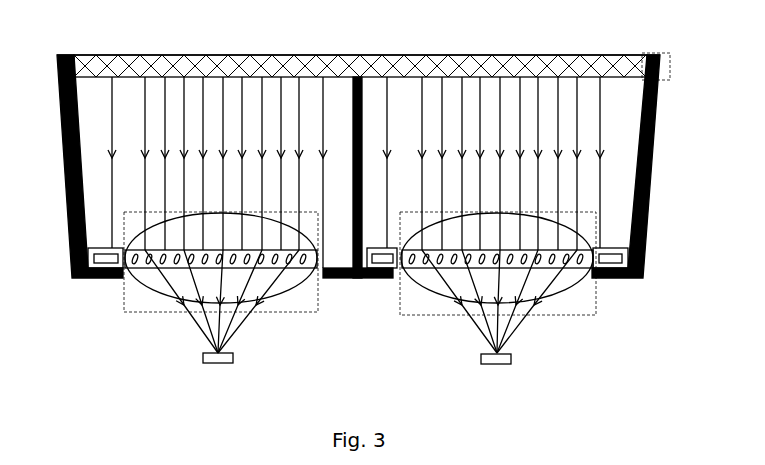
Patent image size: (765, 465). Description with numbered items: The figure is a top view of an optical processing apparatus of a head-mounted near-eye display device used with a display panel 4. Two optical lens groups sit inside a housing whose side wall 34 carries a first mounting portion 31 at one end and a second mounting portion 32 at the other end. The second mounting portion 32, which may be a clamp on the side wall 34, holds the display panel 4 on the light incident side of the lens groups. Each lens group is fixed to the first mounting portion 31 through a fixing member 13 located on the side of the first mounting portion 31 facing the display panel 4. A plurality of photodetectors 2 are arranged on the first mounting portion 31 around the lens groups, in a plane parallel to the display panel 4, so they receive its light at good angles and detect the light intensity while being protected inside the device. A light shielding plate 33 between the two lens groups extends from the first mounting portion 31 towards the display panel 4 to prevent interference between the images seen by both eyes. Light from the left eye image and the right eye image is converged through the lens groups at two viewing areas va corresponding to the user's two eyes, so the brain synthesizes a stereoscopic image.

The photodetector 2 is at (72, 258).
The display panel 4 is at (408, 66).
The fixing member 13 is at (322, 272).
The first mounting portion 31 is at (615, 279).
The second mounting portion 32 is at (666, 53).
The light shielding plate 33 is at (355, 110).
The side wall 34 is at (650, 168).
The viewing area va is at (213, 365).